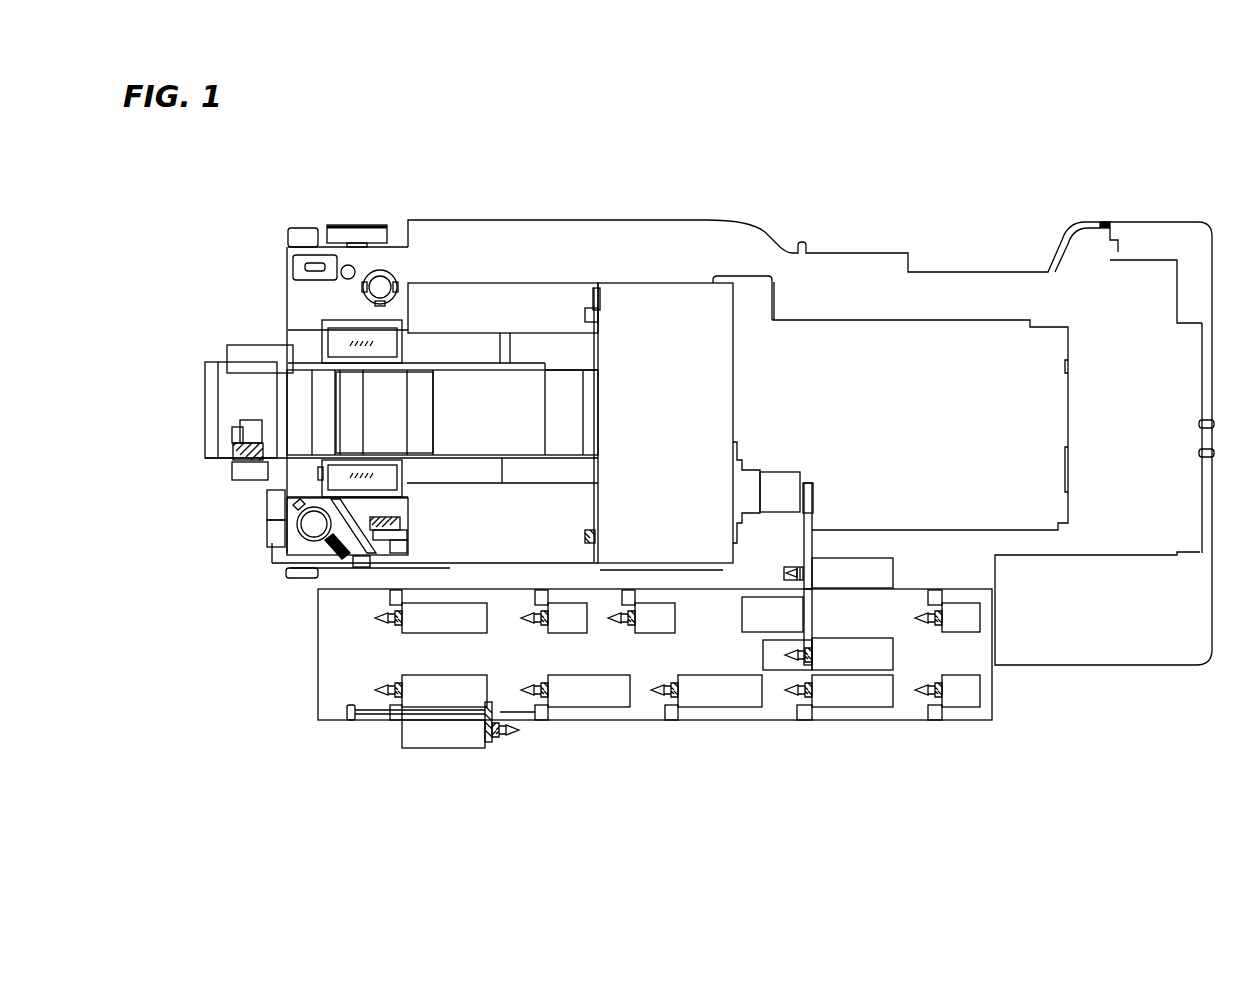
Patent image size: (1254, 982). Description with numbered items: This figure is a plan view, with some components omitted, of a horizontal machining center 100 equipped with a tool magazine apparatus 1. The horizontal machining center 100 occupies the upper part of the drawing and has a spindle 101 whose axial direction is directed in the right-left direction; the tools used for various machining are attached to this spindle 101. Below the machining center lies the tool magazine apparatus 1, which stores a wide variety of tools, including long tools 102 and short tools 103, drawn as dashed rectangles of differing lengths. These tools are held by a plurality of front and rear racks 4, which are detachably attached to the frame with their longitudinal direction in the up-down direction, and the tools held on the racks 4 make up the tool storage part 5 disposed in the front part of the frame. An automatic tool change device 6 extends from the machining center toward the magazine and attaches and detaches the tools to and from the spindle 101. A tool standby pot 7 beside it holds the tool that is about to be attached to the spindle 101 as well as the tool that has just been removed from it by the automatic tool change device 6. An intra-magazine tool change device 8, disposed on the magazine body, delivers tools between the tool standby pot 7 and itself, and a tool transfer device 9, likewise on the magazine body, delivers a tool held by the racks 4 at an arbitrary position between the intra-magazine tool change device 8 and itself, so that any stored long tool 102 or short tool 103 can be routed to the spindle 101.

The tool magazine apparatus 1 is at (978, 733).
The front and rear racks 4 is at (538, 595).
The tool storage part 5 is at (347, 717).
The automatic tool change device 6 is at (813, 503).
The tool standby pot 7 is at (793, 567).
The intra-magazine tool change device 8 is at (813, 622).
The tool transfer device 9 is at (775, 662).
The horizontal machining center 100 is at (708, 216).
The spindle 101 is at (778, 482).
The long tools 102 is at (580, 695).
The short tools 103 is at (952, 695).